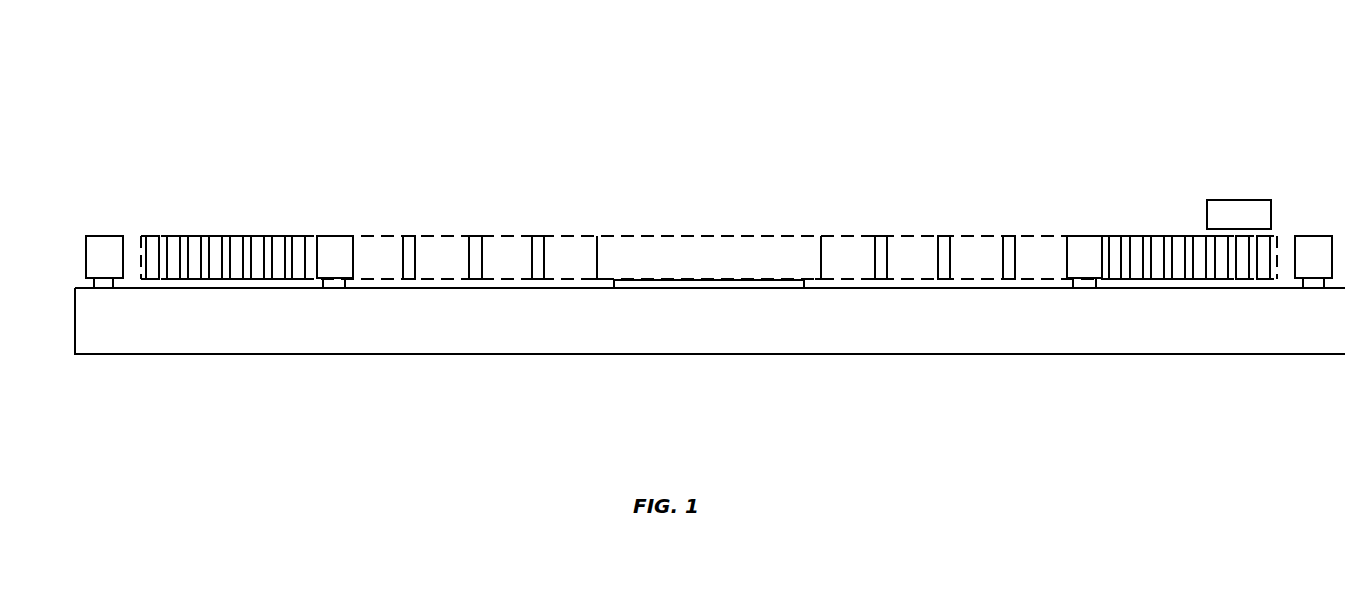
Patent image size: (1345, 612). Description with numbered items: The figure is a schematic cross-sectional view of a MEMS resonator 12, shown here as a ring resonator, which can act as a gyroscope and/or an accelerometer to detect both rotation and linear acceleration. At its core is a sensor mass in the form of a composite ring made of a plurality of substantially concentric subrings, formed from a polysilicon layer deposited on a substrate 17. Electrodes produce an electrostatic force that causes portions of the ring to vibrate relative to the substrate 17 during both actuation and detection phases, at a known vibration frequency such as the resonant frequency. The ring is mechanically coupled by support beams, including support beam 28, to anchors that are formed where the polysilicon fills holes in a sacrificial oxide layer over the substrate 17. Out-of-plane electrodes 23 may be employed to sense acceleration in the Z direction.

The MEMS resonator 12 is at (895, 143).
The substrate 17 is at (647, 333).
The out-of-plane electrode 23 is at (1277, 203).
The support beam 28 is at (713, 236).